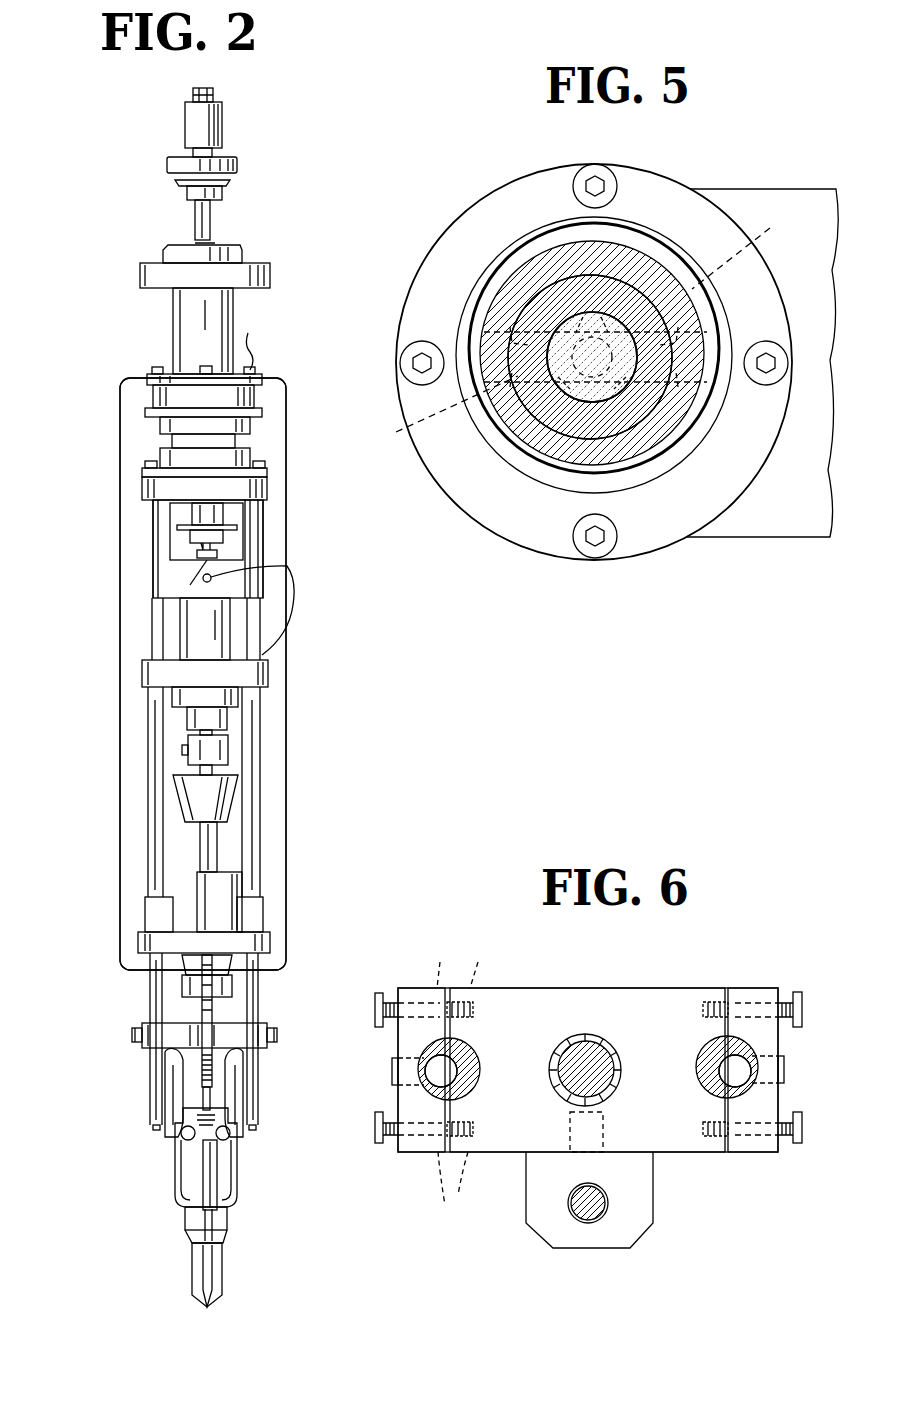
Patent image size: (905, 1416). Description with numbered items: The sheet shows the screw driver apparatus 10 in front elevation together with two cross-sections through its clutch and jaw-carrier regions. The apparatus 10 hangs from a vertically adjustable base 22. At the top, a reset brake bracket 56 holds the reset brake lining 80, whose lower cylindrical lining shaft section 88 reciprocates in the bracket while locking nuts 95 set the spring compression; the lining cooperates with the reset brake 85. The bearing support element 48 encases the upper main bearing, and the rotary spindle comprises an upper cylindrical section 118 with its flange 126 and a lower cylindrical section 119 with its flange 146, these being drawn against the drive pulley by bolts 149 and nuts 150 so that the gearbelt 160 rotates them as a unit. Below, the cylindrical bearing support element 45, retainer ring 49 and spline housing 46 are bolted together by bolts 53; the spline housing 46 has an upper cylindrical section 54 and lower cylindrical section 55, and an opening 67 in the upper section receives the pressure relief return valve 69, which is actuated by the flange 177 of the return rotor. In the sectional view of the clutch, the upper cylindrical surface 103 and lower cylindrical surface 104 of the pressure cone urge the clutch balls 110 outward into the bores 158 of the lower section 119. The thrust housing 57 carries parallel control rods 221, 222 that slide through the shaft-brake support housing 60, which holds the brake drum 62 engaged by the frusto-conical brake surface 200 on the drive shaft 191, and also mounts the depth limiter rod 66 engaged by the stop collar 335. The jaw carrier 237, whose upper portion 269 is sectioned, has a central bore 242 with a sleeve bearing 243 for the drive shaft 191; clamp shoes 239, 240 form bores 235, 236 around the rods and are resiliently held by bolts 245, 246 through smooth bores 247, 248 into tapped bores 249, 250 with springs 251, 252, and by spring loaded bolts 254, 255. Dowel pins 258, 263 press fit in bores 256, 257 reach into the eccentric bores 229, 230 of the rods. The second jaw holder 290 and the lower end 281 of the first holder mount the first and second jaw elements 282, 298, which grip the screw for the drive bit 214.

In FIG. 2, the screw driver apparatus 10 is at (294, 146).
In FIG. 2, the vertically adjustable base 22 is at (122, 538).
In FIG. 2, the cylindrical bearing support element 45 is at (145, 483).
In FIG. 2, the spline housing 46 is at (145, 500).
In FIG. 2, the bearing support element 48 is at (148, 275).
In FIG. 2, the retainer ring 49 is at (262, 468).
In FIG. 5, the retainer ring 49 is at (505, 508).
In FIG. 5, the bolts 53 is at (614, 182).
In FIG. 2, the upper cylindrical section 54 is at (165, 573).
In FIG. 2, the lower cylindrical section 55 is at (192, 625).
In FIG. 2, the reset brake bracket 56 is at (195, 120).
In FIG. 2, the thrust housing 57 is at (155, 673).
In FIG. 2, the shaft-brake support housing 60 is at (172, 938).
In FIG. 2, the brake drum 62 is at (177, 880).
In FIG. 2, the depth limiter rod 66 is at (205, 1010).
In FIG. 6, the depth limiter rod 66 is at (587, 1210).
In FIG. 2, the opening 67 is at (233, 513).
In FIG. 2, the pressure relief return valve 69 is at (200, 583).
In FIG. 2, the reset brake lining 80 is at (167, 165).
In FIG. 2, the reset brake 85 is at (190, 191).
In FIG. 2, the lower cylindrical lining shaft section 88 is at (193, 151).
In FIG. 2, the locking nuts 95 is at (213, 93).
In FIG. 5, the upper cylindrical surface 103 is at (625, 282).
In FIG. 5, the lower cylindrical surface 104 is at (545, 221).
In FIG. 5, the clutch balls 110 is at (586, 328).
In FIG. 2, the upper cylindrical section 118 is at (178, 318).
In FIG. 5, the lower cylindrical section 119 is at (514, 297).
In FIG. 2, the flange 126 is at (258, 376).
In FIG. 2, the flange 146 is at (150, 413).
In FIG. 2, the bolts 149 is at (208, 364).
In FIG. 2, the nuts 150 is at (160, 425).
In FIG. 5, the bores 158 is at (481, 352).
In FIG. 2, the gearbelt 160 is at (258, 397).
In FIG. 2, the flange 177 is at (232, 528).
In FIG. 2, the drive shaft 191 is at (212, 840).
In FIG. 6, the drive shaft 191 is at (603, 1073).
In FIG. 2, the frusto-conical brake surface 200 is at (233, 790).
In FIG. 2, the drive bit 214 is at (213, 1155).
In FIG. 2, the control rod 221 is at (157, 876).
In FIG. 6, the control rod 221 is at (478, 1088).
In FIG. 2, the control rod 222 is at (253, 843).
In FIG. 6, the control rod 222 is at (708, 1085).
In FIG. 6, the bore 229 is at (433, 1083).
In FIG. 6, the bore 230 is at (777, 1088).
In FIG. 6, the bore 235 is at (420, 1052).
In FIG. 6, the bore 236 is at (753, 1053).
In FIG. 2, the jaw carrier 237 is at (232, 1032).
In FIG. 6, the jaw carrier 237 is at (607, 1003).
In FIG. 2, the clamp shoe 239 is at (148, 1035).
In FIG. 6, the clamp shoe 239 is at (415, 1153).
In FIG. 2, the clamp shoe 240 is at (265, 1042).
In FIG. 6, the clamp shoe 240 is at (757, 1152).
In FIG. 6, the bore 242 is at (587, 1040).
In FIG. 6, the sleeve bearing 243 is at (603, 1040).
In FIG. 6, the bolt 245 is at (382, 1022).
In FIG. 6, the bolt 246 is at (382, 1127).
In FIG. 6, the smooth bore 247 is at (421, 968).
In FIG. 6, the smooth bore 248 is at (425, 1188).
In FIG. 6, the tapped bore 249 is at (494, 968).
In FIG. 6, the tapped bore 250 is at (481, 1182).
In FIG. 6, the spring 251 is at (395, 988).
In FIG. 6, the spring 252 is at (392, 1137).
In FIG. 6, the spring loaded bolt 254 is at (795, 993).
In FIG. 6, the spring loaded bolt 255 is at (802, 1135).
In FIG. 6, the bore 256 is at (338, 1090).
In FIG. 6, the bore 257 is at (763, 1053).
In FIG. 6, the dowel pin 258 is at (420, 1074).
In FIG. 6, the dowel pin 263 is at (785, 1067).
In FIG. 6, the upper portion 269 is at (670, 973).
In FIG. 2, the lower end 281 is at (178, 1170).
In FIG. 2, the first jaw element 282 is at (195, 1260).
In FIG. 2, the second jaw holder 290 is at (237, 1165).
In FIG. 2, the second jaw element 298 is at (217, 1270).
In FIG. 6, the stop collar 335 is at (637, 1230).